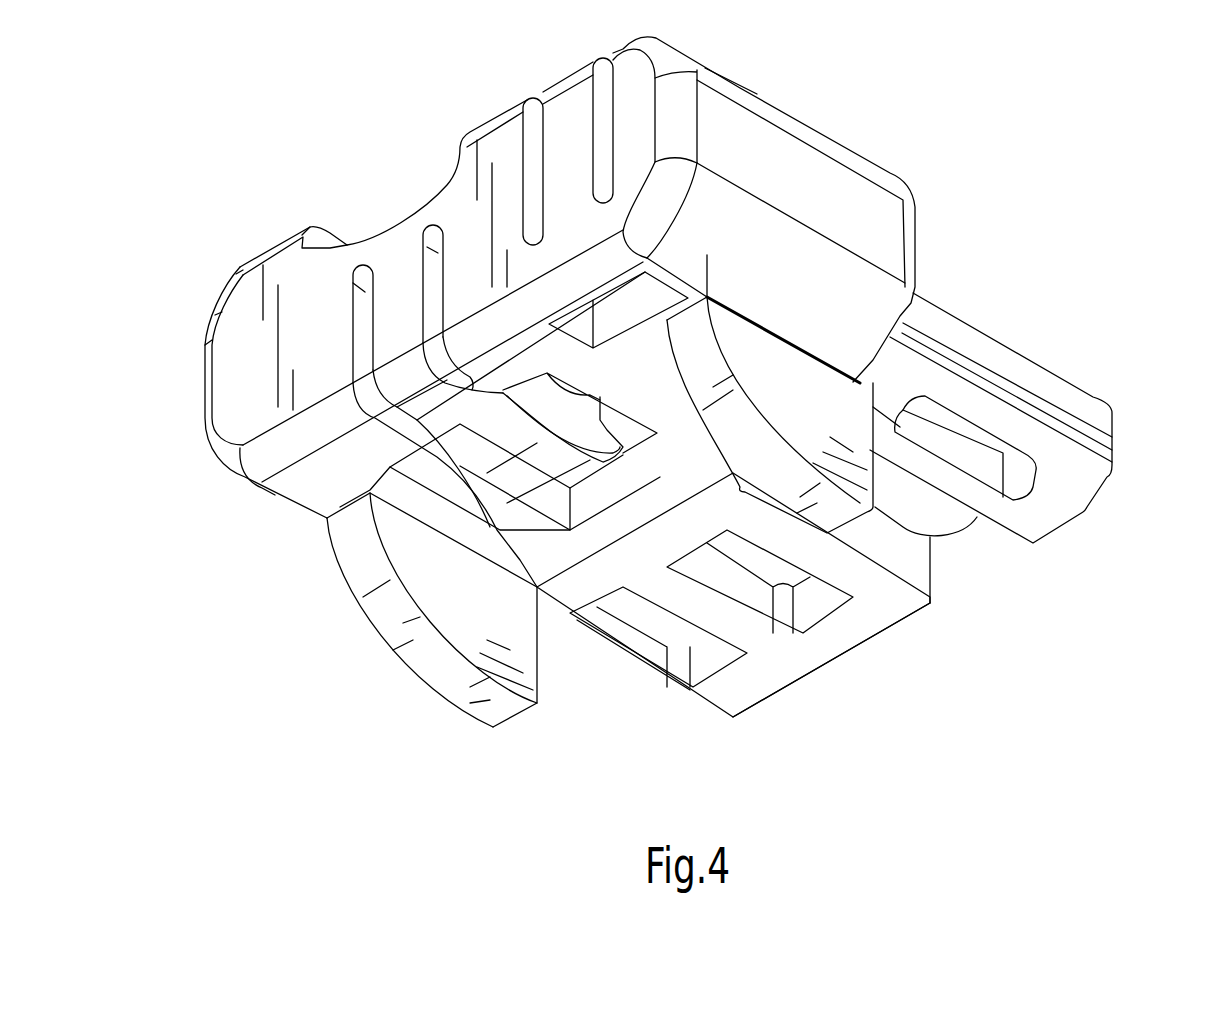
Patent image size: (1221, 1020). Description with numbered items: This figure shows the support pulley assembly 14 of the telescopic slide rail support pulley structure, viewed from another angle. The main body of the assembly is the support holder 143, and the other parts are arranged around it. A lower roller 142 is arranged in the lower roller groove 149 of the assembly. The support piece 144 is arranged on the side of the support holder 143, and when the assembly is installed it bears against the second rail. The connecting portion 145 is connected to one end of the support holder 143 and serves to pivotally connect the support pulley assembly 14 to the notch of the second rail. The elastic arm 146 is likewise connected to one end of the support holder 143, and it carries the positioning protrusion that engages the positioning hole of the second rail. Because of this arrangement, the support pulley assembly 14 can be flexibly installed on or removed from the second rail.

The support pulley assembly 14 is at (464, 120).
The lower roller 142 is at (467, 437).
The support holder 143 is at (247, 318).
The support piece 144 is at (840, 450).
The connecting portion 145 is at (1077, 472).
The elastic arm 146 is at (940, 525).
The lower roller groove 149 is at (485, 425).